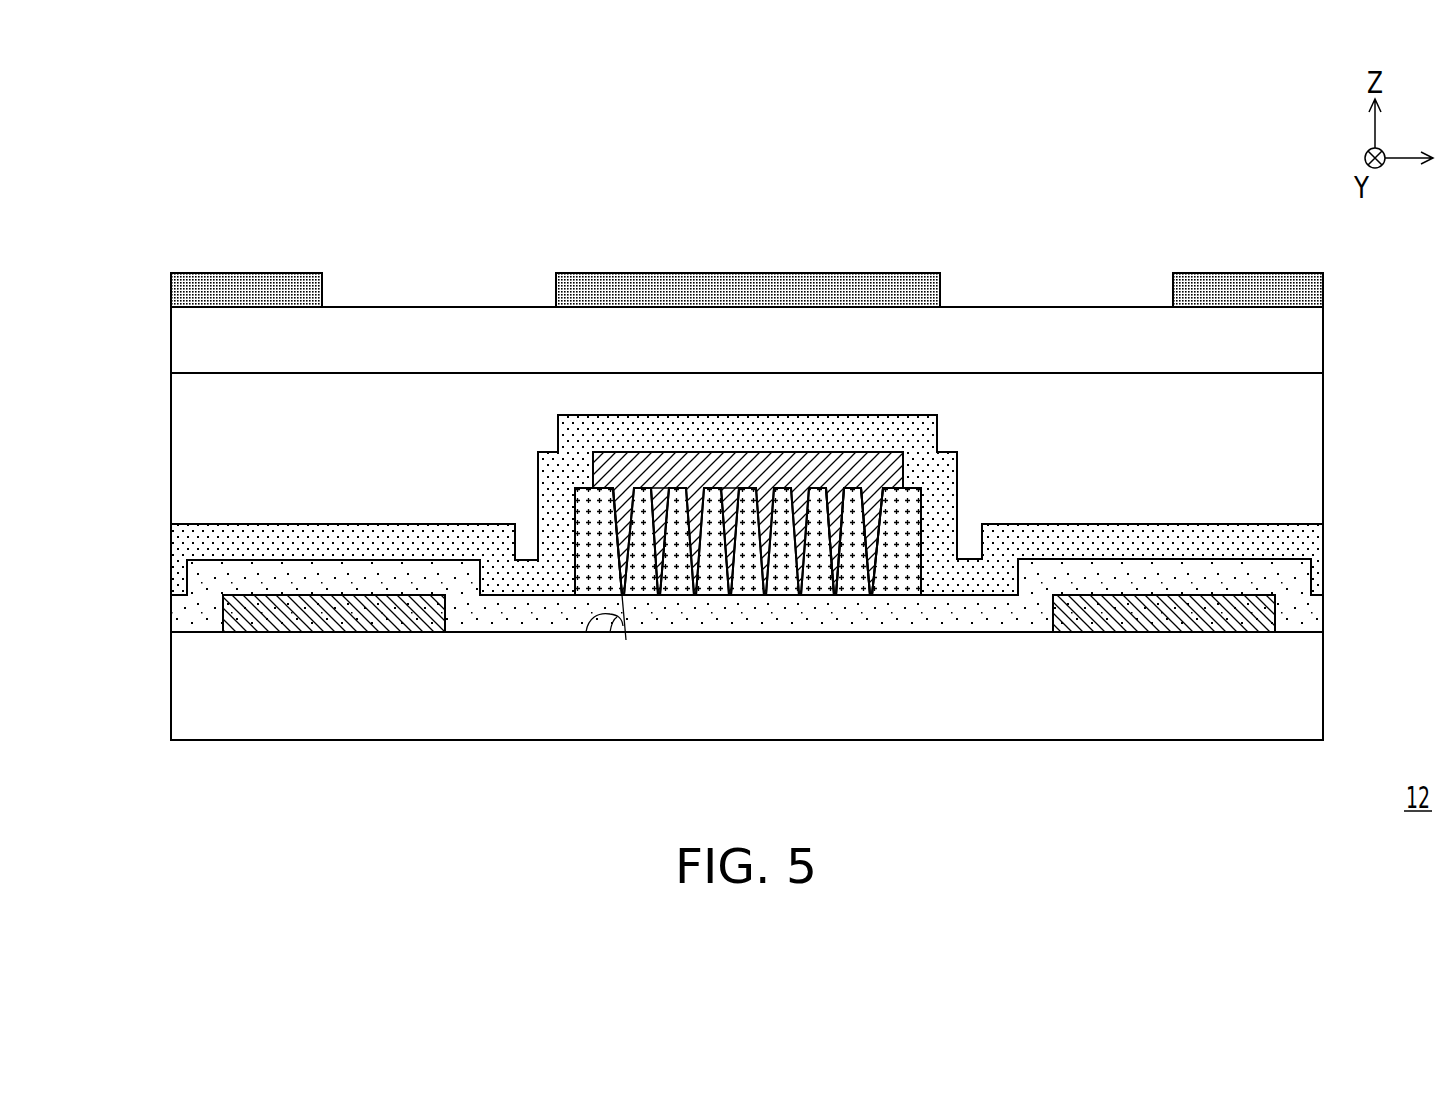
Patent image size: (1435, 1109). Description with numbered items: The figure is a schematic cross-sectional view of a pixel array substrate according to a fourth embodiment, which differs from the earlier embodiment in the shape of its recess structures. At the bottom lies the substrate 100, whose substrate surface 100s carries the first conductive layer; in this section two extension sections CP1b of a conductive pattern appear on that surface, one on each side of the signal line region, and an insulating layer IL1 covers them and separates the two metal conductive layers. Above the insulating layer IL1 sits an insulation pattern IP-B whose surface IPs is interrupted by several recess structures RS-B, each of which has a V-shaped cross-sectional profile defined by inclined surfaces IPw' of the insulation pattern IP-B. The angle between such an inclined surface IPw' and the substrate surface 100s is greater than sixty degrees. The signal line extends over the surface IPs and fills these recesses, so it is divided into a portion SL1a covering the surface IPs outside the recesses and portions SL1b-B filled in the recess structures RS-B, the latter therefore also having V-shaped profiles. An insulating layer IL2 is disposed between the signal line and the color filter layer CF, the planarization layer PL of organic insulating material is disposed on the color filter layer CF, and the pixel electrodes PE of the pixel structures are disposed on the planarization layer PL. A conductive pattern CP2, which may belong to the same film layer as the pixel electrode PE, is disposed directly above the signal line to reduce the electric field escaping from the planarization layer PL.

The pixel electrode PE is at (1249, 280).
The conductive pattern CP2 is at (586, 282).
The portion of the signal line SL1a is at (703, 462).
The recess structure RS-B is at (877, 487).
The planarization layer PL is at (1313, 341).
The color filter layer CF is at (1313, 447).
The insulating layer IL2 is at (1313, 545).
The insulating layer IL1 is at (1313, 612).
The substrate 100 is at (1313, 685).
The substrate surface 100s is at (204, 619).
The extension section CP1b is at (1163, 760).
The portion of the signal line SL1b-B is at (696, 552).
The insulation pattern IP-B is at (903, 517).
The surface IPs is at (919, 476).
The inclined surface IPw' is at (557, 501).